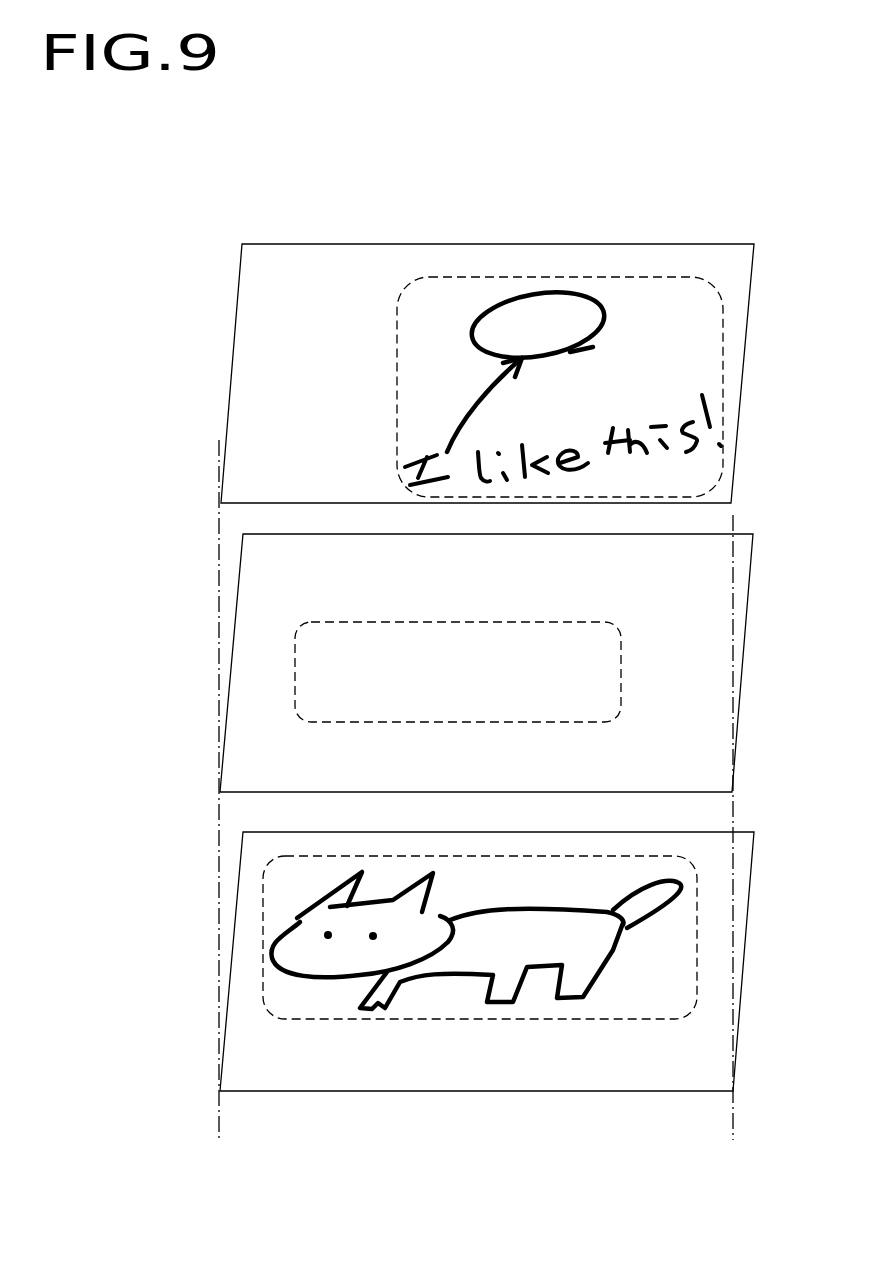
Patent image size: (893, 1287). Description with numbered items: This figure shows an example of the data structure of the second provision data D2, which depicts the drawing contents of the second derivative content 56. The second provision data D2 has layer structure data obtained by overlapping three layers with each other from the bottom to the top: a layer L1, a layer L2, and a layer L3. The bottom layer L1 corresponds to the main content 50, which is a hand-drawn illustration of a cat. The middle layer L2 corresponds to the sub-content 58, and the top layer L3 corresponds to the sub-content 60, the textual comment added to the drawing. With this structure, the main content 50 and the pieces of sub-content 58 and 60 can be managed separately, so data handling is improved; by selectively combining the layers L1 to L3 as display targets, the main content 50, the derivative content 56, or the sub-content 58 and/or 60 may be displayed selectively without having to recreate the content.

The second provision data D2 is at (140, 117).
The second derivative content 56 is at (210, 243).
The sub-content 60 is at (556, 277).
The sub-content 58 is at (622, 653).
The main content 50 is at (573, 1018).
The layer L1 is at (243, 953).
The layer L2 is at (243, 661).
The layer L3 is at (243, 372).